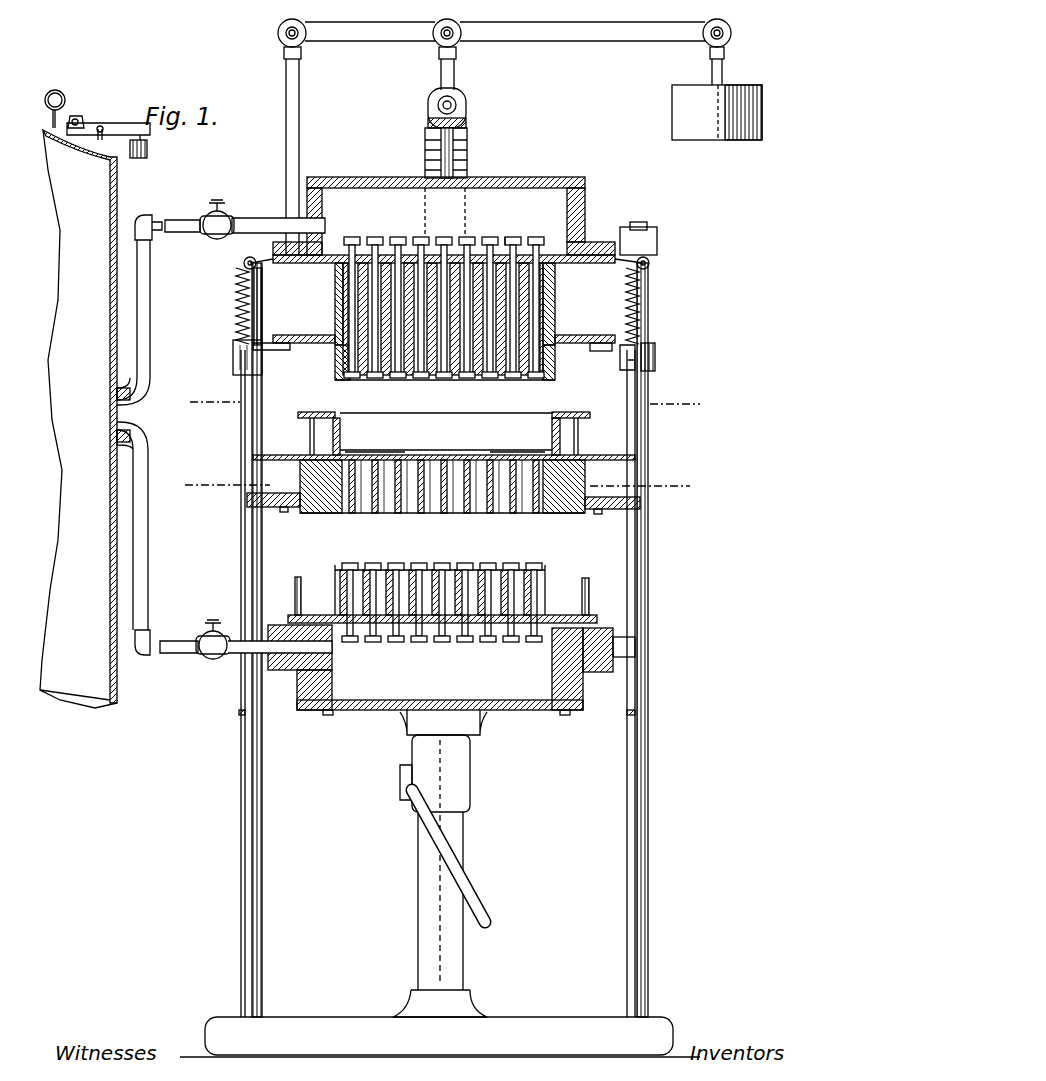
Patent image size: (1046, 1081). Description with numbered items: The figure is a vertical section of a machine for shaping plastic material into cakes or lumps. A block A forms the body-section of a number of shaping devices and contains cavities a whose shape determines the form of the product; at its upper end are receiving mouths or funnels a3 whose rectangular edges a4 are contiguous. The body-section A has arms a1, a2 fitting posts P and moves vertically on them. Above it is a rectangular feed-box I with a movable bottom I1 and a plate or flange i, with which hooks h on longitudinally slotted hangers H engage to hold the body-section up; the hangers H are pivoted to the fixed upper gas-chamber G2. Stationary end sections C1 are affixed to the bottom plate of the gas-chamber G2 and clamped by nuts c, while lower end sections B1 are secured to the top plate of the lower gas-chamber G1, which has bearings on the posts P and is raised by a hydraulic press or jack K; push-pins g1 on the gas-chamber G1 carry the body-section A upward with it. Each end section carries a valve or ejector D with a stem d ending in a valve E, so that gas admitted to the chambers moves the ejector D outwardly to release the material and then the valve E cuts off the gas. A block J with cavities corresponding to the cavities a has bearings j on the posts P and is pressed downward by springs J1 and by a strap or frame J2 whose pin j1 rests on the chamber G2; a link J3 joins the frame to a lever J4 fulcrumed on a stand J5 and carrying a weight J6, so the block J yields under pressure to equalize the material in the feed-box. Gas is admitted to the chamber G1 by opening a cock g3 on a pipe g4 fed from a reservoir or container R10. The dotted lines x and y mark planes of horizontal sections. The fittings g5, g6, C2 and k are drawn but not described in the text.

The lever J4 is at (504, 37).
The stand J5 is at (299, 151).
The link J3 is at (451, 87).
The strap or frame J2 is at (454, 153).
The pin j1 is at (440, 142).
The weight J6 is at (717, 93).
The gas-chamber G2 is at (508, 167).
The nuts c is at (444, 437).
The upper cylinder wall C2 is at (301, 321).
The end sections C1 is at (579, 321).
The block J is at (566, 377).
The valve or ejector D is at (356, 378).
The valve E is at (443, 440).
The stem d is at (506, 240).
The springs J1 is at (660, 290).
The hooks h is at (242, 370).
The bearings j is at (655, 360).
The stop block k is at (628, 368).
The hangers H is at (252, 420).
The posts P is at (448, 683).
The dotted line x x is at (438, 404).
The dotted line y y is at (435, 486).
The plate or flange i is at (444, 448).
The block A is at (552, 513).
The cavities a is at (356, 513).
The feed-box I is at (340, 430).
The movable bottom I1 is at (465, 433).
The receiving mouths or funnels a3 is at (362, 452).
The edges a4 is at (500, 452).
The arm a1 is at (273, 499).
The arm a2 is at (612, 498).
The gas-chamber G1 is at (451, 665).
The end sections B1 is at (545, 572).
The push-pins g1 is at (443, 596).
The hydraulic press or jack K is at (470, 775).
The upper valve g5 is at (261, 227).
The upper pipe elbow g6 is at (167, 234).
The cock g3 is at (264, 647).
The pipe or container g4 is at (180, 640).
The reservoir or container R10 is at (78, 419).